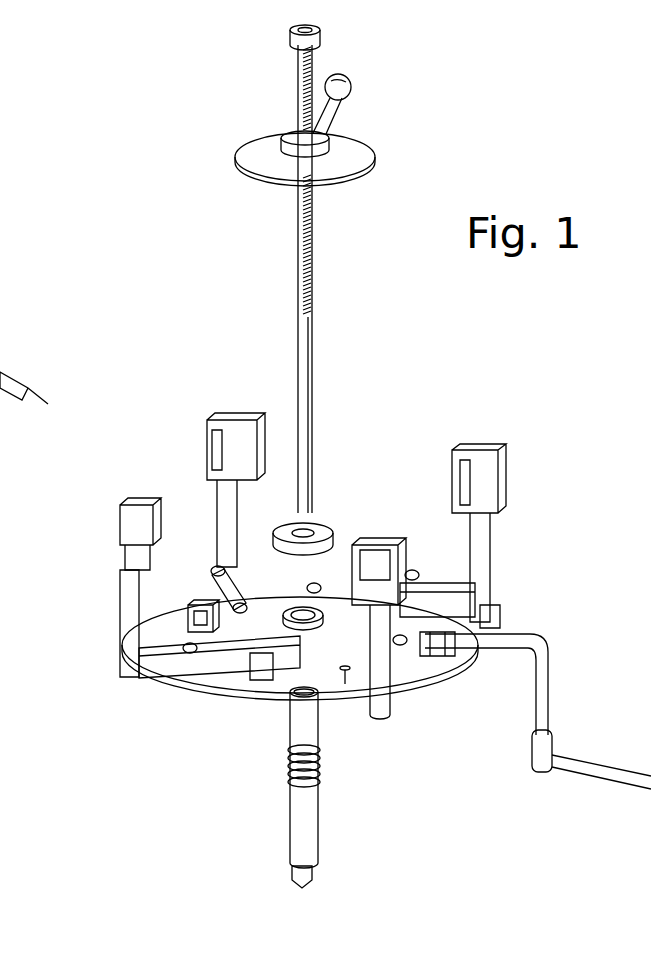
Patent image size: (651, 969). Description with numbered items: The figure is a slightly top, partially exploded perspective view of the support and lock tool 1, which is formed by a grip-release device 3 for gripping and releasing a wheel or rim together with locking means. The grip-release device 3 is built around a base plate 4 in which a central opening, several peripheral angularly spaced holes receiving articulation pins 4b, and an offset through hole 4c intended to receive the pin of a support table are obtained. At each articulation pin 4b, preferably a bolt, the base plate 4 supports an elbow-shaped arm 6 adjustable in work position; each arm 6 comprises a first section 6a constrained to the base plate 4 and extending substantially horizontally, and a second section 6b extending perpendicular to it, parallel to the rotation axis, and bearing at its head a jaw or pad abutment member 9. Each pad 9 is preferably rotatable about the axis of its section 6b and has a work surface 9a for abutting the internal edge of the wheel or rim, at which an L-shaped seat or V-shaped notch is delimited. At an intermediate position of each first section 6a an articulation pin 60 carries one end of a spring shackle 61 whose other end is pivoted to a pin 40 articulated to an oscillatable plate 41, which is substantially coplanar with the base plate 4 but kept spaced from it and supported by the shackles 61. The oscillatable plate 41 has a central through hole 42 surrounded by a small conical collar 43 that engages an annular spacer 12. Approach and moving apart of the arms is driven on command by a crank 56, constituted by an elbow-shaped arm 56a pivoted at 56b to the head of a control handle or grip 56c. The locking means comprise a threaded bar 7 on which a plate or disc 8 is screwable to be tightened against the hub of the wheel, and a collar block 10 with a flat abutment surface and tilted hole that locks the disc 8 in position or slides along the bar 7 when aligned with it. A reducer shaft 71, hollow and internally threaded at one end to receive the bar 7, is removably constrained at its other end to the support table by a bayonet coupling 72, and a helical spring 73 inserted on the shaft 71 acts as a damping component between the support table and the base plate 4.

The support and lock tool 1 is at (112, 729).
The grip-release device 3 is at (349, 497).
The base plate 4 is at (388, 700).
The articulation pin 4b is at (193, 606).
The through hole 4c is at (345, 686).
The elbow-shaped arm 6 is at (122, 645).
The first section 6a is at (215, 678).
The second section 6b is at (118, 592).
The threaded bar 7 is at (298, 307).
The plate or disc 8 is at (240, 160).
The jaw or pad abutment member 9 is at (226, 447).
The work surface 9a is at (120, 526).
The collar block 10 is at (283, 136).
The annular spacer 12 is at (321, 520).
The pin 40 is at (218, 566).
The oscillatable plate 41 is at (285, 612).
The central through hole 42 is at (298, 612).
The small conical collar 43 is at (362, 576).
The crank 56 is at (540, 687).
The elbow-shaped arm 56a is at (500, 650).
The pivot 56b is at (545, 769).
The control handle or grip 56c is at (592, 765).
The articulation pin 60 is at (128, 670).
The spring shackle 61 is at (215, 655).
The reducer shaft 71 is at (290, 800).
The bayonet coupling 72 is at (312, 876).
The helical spring 73 is at (318, 765).